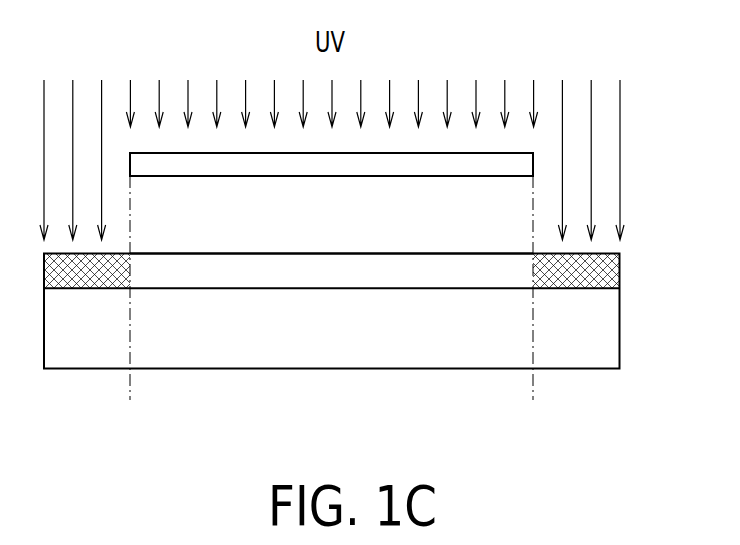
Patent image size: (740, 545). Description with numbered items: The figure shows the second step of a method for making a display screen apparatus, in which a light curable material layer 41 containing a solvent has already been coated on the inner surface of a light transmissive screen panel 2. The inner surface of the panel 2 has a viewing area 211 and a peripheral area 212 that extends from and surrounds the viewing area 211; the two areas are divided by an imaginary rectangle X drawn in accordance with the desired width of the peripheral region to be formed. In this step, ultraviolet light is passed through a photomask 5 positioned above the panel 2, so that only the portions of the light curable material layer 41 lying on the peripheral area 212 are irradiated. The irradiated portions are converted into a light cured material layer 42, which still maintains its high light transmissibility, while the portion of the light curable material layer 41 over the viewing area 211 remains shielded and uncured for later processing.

The light transmissive screen panel 2 is at (620, 331).
The photomask 5 is at (267, 168).
The light curable material layer 41 is at (390, 272).
The light cured material layer 42 is at (607, 253).
The viewing area 211 is at (432, 288).
The peripheral area 212 is at (568, 288).
The imaginary rectangle X is at (130, 378).